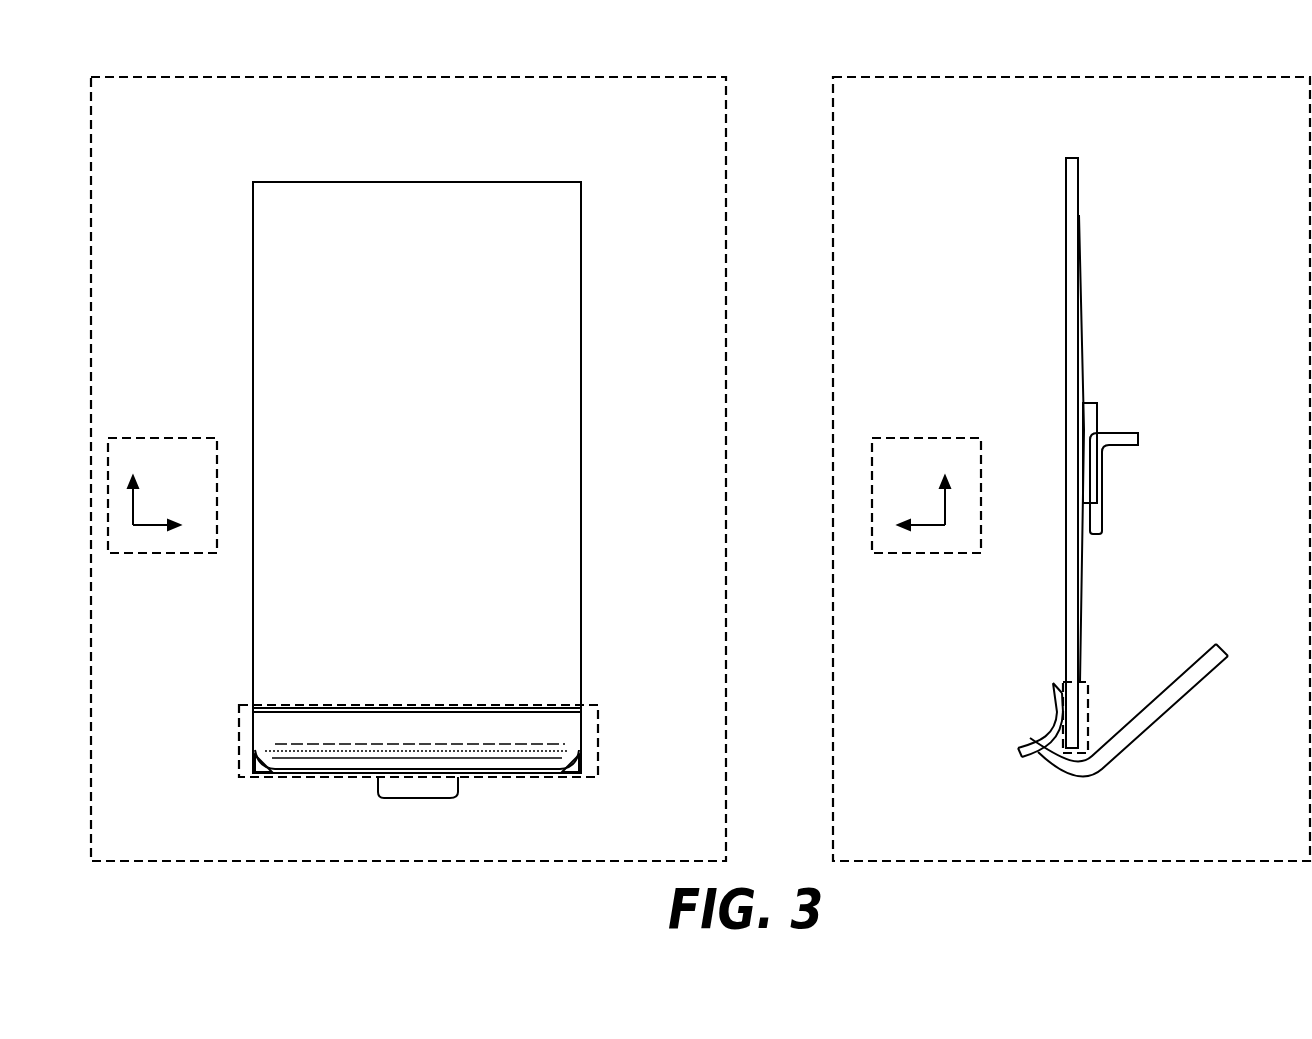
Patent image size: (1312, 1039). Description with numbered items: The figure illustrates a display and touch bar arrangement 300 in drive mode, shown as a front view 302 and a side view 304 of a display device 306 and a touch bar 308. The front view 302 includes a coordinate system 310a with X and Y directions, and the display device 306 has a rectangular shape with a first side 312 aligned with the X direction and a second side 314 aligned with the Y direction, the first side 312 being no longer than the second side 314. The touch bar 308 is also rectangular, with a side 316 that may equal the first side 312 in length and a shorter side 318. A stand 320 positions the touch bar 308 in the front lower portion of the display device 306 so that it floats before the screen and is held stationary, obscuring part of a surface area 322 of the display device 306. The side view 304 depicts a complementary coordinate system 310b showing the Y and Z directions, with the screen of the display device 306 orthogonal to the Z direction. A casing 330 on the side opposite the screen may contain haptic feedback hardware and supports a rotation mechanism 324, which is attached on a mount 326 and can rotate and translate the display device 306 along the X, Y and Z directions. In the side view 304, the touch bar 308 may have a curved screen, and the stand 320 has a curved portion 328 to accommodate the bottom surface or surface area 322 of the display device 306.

The display assembly 300 is at (1311, 38).
The front view 302 is at (266, 77).
The side view 304 is at (900, 77).
The display device 306 is at (283, 290).
The touch bar 308 is at (257, 733).
The coordinate system 310a is at (127, 438).
The coordinate system 310b is at (889, 438).
The first side 312 is at (474, 182).
The second side 314 is at (581, 370).
The side 316 is at (315, 705).
The side 318 is at (253, 771).
The stand 320 is at (440, 790).
The surface area 322 is at (598, 707).
The rotation mechanism 324 is at (1088, 400).
The mount 326 is at (1138, 440).
The curved portion 328 is at (1077, 772).
The casing 330 is at (1083, 272).